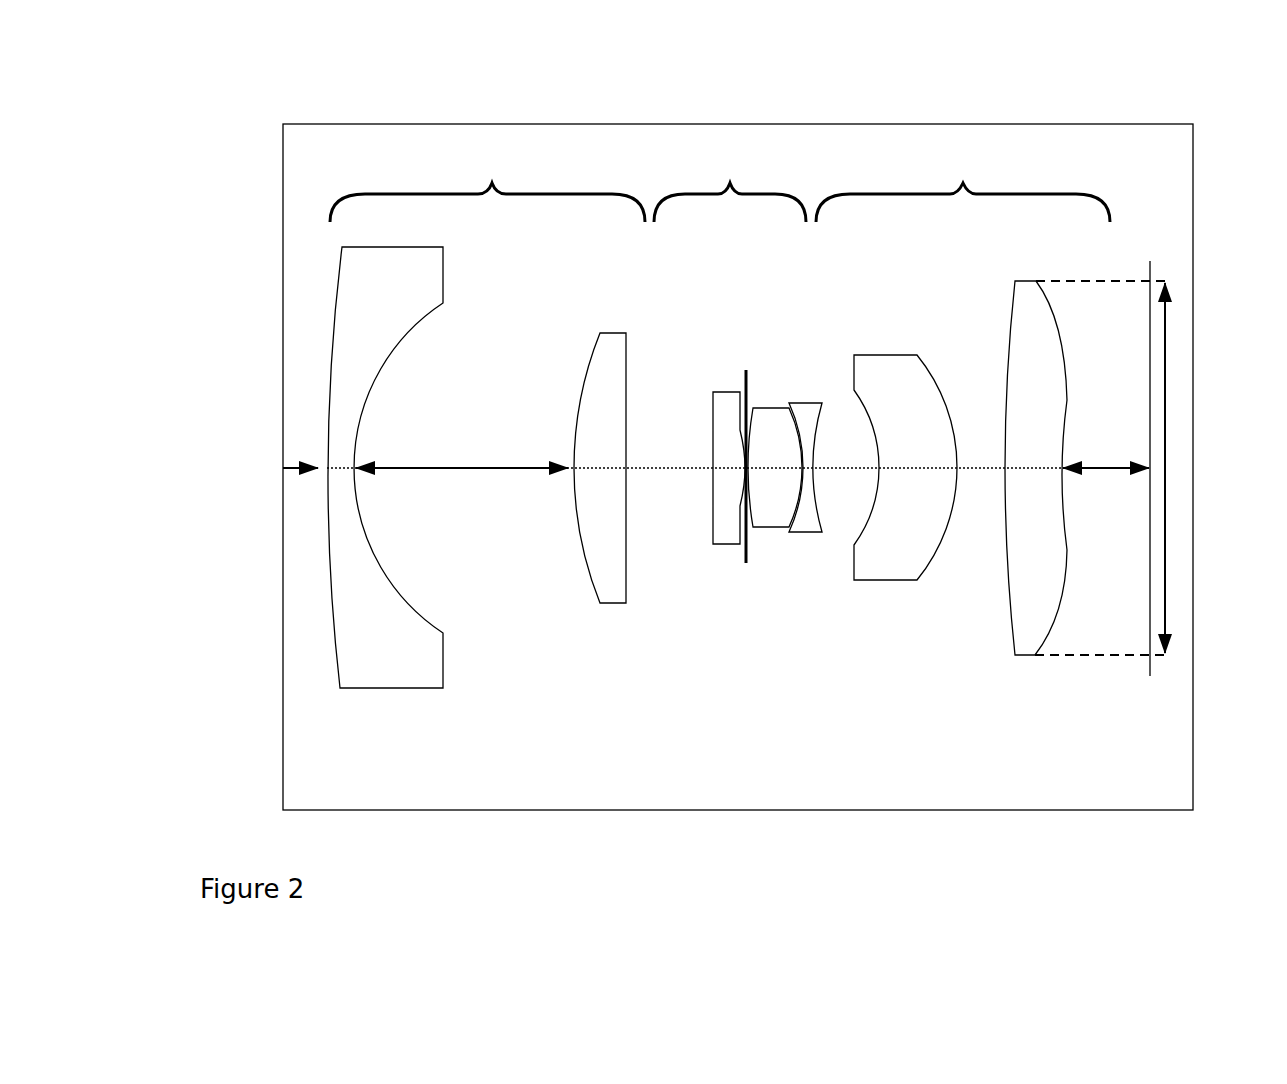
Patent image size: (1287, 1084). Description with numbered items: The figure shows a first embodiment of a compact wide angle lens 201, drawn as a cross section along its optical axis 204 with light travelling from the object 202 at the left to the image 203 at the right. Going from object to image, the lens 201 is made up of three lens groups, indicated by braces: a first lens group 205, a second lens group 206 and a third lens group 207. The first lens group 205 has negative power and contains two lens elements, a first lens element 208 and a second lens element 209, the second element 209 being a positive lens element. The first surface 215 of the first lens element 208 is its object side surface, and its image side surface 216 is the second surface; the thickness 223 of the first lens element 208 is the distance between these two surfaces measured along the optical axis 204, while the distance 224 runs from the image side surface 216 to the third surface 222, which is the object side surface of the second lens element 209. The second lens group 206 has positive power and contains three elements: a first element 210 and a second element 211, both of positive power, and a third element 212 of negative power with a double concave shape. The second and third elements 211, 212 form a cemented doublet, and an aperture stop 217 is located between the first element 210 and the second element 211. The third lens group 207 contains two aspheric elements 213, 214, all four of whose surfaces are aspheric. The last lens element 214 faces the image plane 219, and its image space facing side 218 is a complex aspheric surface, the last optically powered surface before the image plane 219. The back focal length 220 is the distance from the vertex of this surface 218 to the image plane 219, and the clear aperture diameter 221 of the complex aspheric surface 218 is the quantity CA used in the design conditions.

The compact wide angle lens 201 is at (613, 847).
The object 202 is at (273, 430).
The image 203 is at (1240, 423).
The optical axis 204 is at (662, 448).
The first lens group 205 is at (487, 187).
The second lens group 206 is at (730, 187).
The third lens group 207 is at (963, 187).
The first lens element 208 is at (385, 488).
The second lens element 209 is at (599, 492).
The first element of second lens group 210 is at (712, 494).
The second element of second lens group 211 is at (766, 552).
The third element of second lens group 212 is at (806, 554).
The first element of third lens group 213 is at (897, 494).
The last lens element 214 is at (1033, 486).
The first surface of first lens element 215 is at (306, 350).
The image side surface of first lens element 216 is at (398, 377).
The aperture stop 217 is at (747, 348).
The complex aspheric surface 218 is at (1092, 347).
The image plane 219 is at (1143, 686).
The back focal length 220 is at (1104, 505).
The clear aperture diameter 221 is at (1185, 370).
The third surface 222 is at (548, 494).
The thickness of first lens element 223 is at (337, 503).
The distance from image side surface to third surface 224 is at (493, 448).